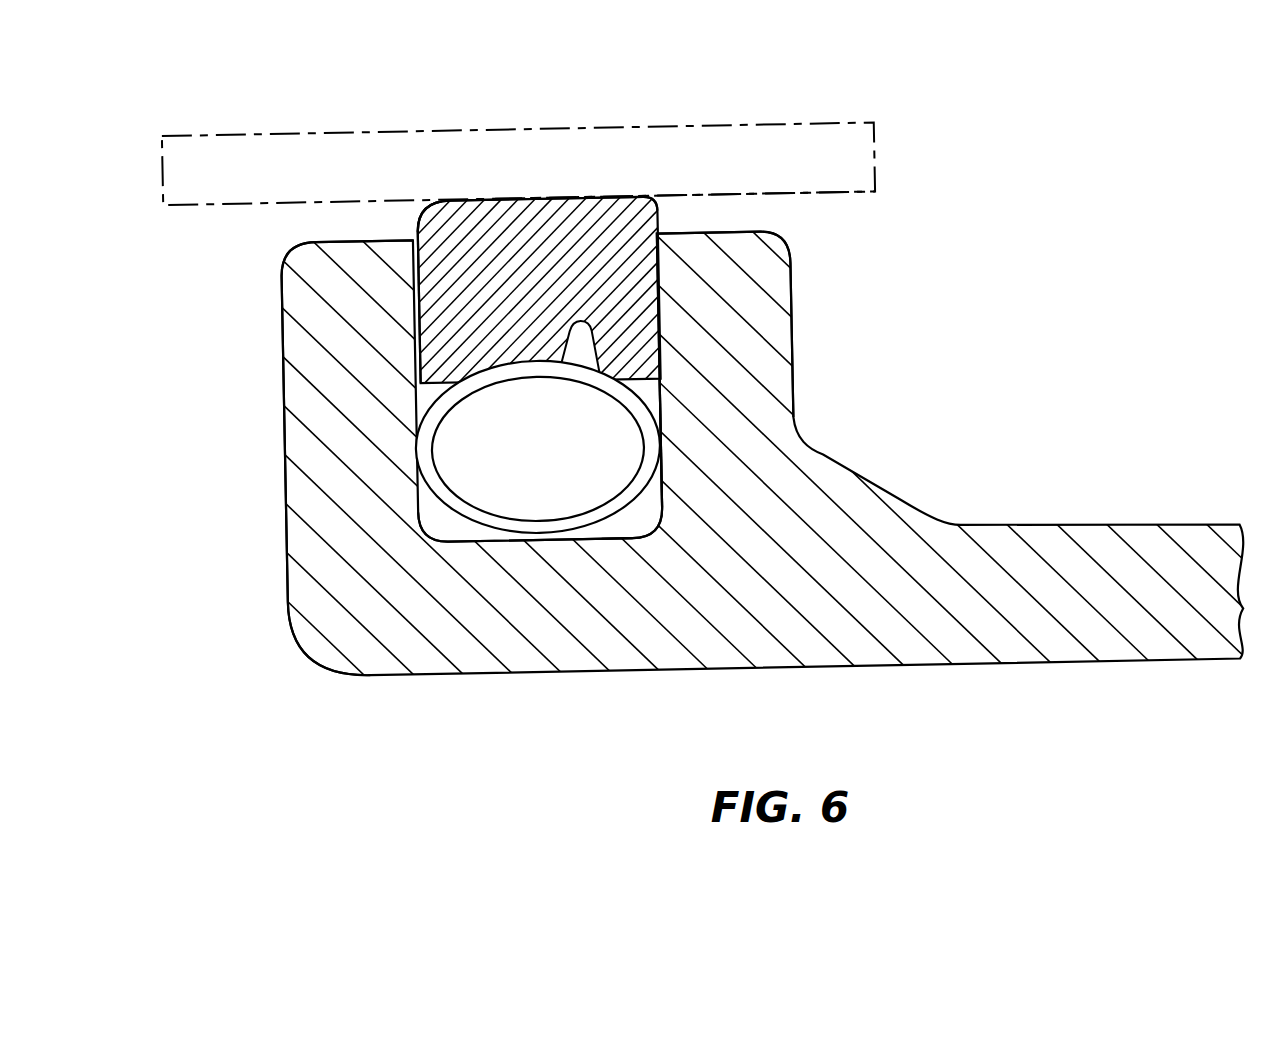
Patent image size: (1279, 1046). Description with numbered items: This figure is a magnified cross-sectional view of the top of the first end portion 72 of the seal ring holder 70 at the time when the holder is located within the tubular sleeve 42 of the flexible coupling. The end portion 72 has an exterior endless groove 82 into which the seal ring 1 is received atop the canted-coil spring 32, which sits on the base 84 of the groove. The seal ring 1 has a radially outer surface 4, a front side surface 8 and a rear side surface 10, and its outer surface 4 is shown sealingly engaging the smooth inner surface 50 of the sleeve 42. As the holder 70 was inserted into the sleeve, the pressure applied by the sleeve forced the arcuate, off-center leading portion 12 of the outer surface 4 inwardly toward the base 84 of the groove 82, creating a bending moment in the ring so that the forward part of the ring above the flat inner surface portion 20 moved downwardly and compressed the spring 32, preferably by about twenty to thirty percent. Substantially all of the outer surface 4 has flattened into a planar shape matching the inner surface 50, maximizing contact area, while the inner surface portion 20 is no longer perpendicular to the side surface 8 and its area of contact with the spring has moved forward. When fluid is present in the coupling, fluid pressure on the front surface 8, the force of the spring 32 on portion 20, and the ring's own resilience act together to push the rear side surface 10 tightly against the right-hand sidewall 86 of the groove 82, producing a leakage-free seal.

The seal ring 1 is at (569, 199).
The outer surface 4 is at (511, 198).
The front side surface 8 is at (413, 323).
The rear side surface 10 is at (662, 318).
The leading portion 12 is at (436, 210).
The leading portion of inner surface 20 is at (437, 380).
The canted-coil spring 32 is at (654, 443).
The tubular sleeve 42 is at (856, 120).
The inner surface of sleeve 50 is at (868, 194).
The seal ring holder 70 is at (1002, 660).
The first end portion 72 is at (287, 410).
The exterior endless groove 82 is at (436, 519).
The base of groove 84 is at (630, 535).
The right-hand sidewall 86 is at (658, 395).